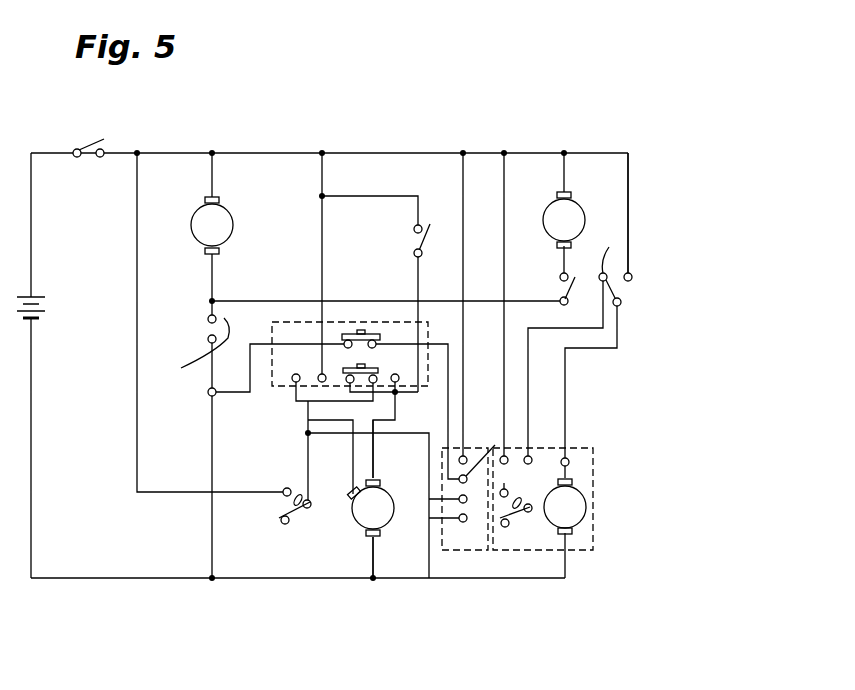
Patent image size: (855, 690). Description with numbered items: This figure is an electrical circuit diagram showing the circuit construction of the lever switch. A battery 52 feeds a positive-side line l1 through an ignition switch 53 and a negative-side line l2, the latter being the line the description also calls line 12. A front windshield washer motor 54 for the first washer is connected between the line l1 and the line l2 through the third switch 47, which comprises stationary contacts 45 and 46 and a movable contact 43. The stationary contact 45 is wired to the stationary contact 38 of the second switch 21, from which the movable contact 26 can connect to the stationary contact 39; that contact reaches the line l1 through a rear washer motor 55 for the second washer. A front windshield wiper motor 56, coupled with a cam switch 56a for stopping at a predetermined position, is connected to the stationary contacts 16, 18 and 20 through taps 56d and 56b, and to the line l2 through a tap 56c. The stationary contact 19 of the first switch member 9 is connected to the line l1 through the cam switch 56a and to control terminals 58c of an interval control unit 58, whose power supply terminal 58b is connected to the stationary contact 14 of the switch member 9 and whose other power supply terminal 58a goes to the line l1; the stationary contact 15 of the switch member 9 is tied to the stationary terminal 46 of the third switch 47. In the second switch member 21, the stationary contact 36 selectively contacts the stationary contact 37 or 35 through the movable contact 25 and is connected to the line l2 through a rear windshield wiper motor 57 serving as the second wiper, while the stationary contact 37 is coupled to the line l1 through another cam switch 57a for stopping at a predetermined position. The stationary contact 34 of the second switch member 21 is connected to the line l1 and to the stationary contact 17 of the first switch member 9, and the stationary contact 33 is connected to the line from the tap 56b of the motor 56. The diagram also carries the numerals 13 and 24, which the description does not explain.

The line l1 is at (378, 151).
The line l2 is at (330, 580).
The ignition switch 53 is at (90, 142).
The battery 52 is at (45, 302).
The front windshield washer motor 54 is at (232, 218).
The third switch 47 is at (196, 290).
The stationary contact 45 is at (208, 318).
The stationary contact 46 is at (208, 339).
The movable contact 43 is at (185, 357).
The first switch member 9 is at (266, 330).
The stationary contact 16 is at (292, 380).
The stationary contact 17 is at (320, 374).
The stationary contact 18 is at (348, 375).
The stationary contact 15 is at (347, 340).
The line 12 is at (361, 330).
The stationary contact 14 is at (375, 340).
The relay contact 13 is at (378, 368).
The stationary contact 19 is at (377, 344).
The stationary contact 20 is at (399, 378).
The switch blade 24 is at (452, 220).
The stationary contact 34 is at (414, 228).
The stationary contact 33 is at (414, 252).
The rear washer motor 55 is at (545, 217).
The stationary contact 39 is at (560, 276).
The stationary contact 38 is at (560, 302).
The movable contact 26 is at (579, 286).
The stationary contact 37 is at (606, 251).
The stationary contact 36 is at (621, 304).
The movable contact 25 is at (632, 278).
The stationary contact 35 is at (632, 274).
The second switch member 21 is at (688, 248).
The front windshield wiper motor 56 is at (356, 510).
The cam switch 56a is at (298, 523).
The tap 56b is at (372, 453).
The tap 56c is at (378, 542).
The tap 56d is at (306, 452).
The rear windshield wiper motor 57 is at (583, 503).
The cam switch 57a is at (515, 517).
The interval control unit 58 is at (480, 445).
The power supply terminal 58a is at (460, 458).
The power supply terminal 58b is at (497, 437).
The control terminals 58c is at (466, 502).